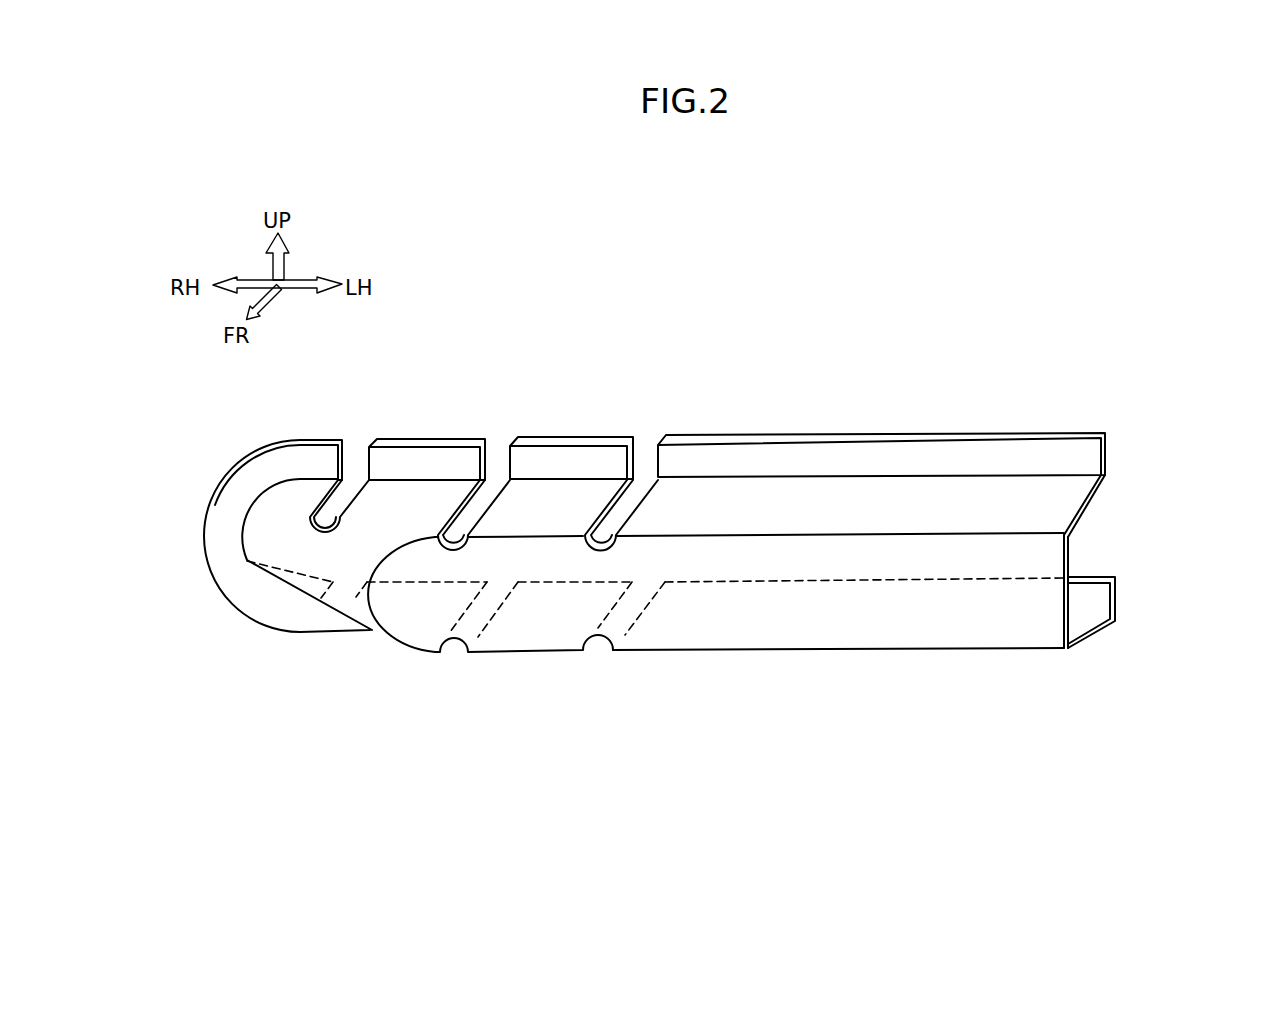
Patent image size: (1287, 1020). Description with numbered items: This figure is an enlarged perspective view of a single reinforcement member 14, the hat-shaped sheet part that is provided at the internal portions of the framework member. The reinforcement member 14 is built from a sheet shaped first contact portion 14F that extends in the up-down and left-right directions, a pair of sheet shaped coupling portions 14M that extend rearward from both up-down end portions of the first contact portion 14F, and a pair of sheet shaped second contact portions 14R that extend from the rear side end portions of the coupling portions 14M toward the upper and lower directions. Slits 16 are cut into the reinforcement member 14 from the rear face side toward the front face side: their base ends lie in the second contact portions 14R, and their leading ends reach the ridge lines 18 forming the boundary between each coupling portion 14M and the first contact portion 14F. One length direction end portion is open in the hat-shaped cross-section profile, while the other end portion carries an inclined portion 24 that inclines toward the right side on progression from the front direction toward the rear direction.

The reinforcement member 14 is at (1134, 328).
The second contact portion 14R is at (989, 458).
The coupling portion 14M is at (857, 505).
The first contact portion 14F is at (810, 625).
The slit 16 is at (348, 488).
The ridge line 18 is at (707, 533).
The inclined portion 24 is at (297, 600).